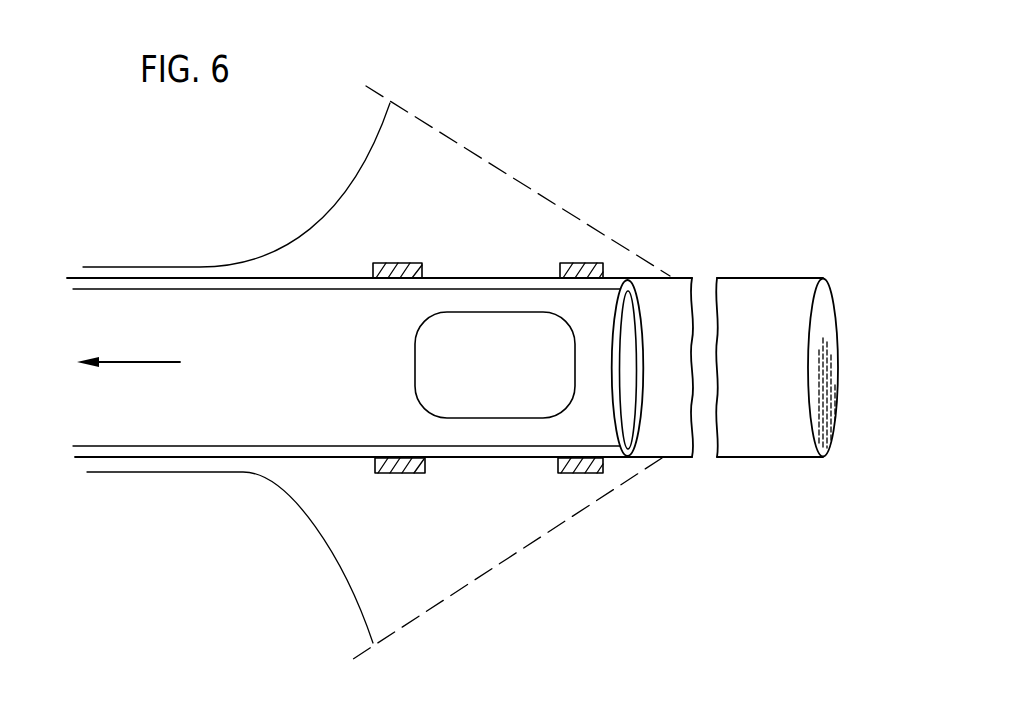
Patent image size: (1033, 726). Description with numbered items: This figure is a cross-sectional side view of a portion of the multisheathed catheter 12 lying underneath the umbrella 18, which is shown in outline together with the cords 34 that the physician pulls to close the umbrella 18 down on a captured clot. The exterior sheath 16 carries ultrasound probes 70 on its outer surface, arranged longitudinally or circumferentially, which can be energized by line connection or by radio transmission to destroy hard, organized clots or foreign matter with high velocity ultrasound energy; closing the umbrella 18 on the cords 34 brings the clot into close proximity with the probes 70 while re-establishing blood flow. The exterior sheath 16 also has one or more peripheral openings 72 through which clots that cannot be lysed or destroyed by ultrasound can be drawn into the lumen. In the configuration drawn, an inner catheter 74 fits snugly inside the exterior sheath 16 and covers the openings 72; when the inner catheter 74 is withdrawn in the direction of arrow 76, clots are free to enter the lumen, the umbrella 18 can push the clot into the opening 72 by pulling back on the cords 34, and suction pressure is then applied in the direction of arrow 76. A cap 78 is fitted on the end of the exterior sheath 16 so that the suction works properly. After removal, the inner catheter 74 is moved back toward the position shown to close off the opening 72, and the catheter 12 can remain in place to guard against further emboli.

The multisheathed catheter 12 is at (165, 207).
The exterior sheath 16 is at (197, 278).
The umbrella 18 is at (525, 190).
The cords 34 is at (335, 203).
The ultrasound probes 70 is at (390, 263).
The peripheral openings 72 is at (500, 376).
The inner catheter 74 is at (145, 445).
The arrow 76 is at (127, 346).
The cap 78 is at (823, 330).